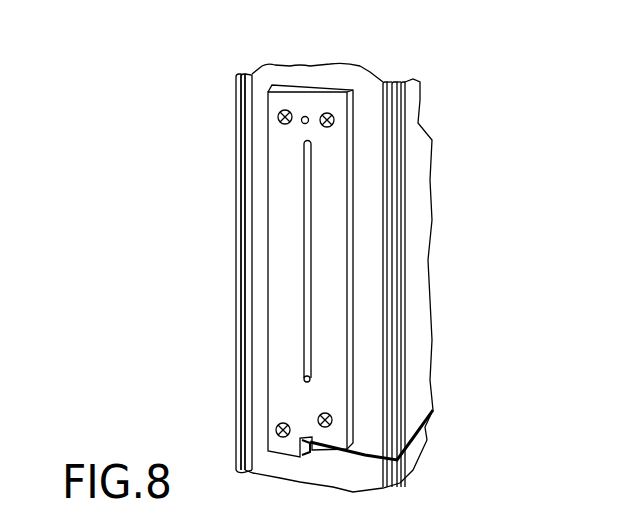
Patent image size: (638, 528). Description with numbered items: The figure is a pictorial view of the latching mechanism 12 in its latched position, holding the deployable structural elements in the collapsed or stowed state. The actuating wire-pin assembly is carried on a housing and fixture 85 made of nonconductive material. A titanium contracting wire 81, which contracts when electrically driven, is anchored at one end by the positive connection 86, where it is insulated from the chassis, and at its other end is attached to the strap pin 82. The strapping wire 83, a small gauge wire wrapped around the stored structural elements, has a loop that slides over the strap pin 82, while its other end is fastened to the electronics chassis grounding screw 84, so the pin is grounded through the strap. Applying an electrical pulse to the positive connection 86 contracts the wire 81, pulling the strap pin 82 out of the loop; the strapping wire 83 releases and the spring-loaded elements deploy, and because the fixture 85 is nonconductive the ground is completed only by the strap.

The latching mechanism 12 is at (490, 425).
The contracting wire 81 is at (310, 177).
The strap pin 82 is at (307, 380).
The strapping wire 83 is at (433, 410).
The grounding screw 84 is at (276, 430).
The housing and fixture 85 is at (273, 244).
The positive connection 86 is at (300, 127).